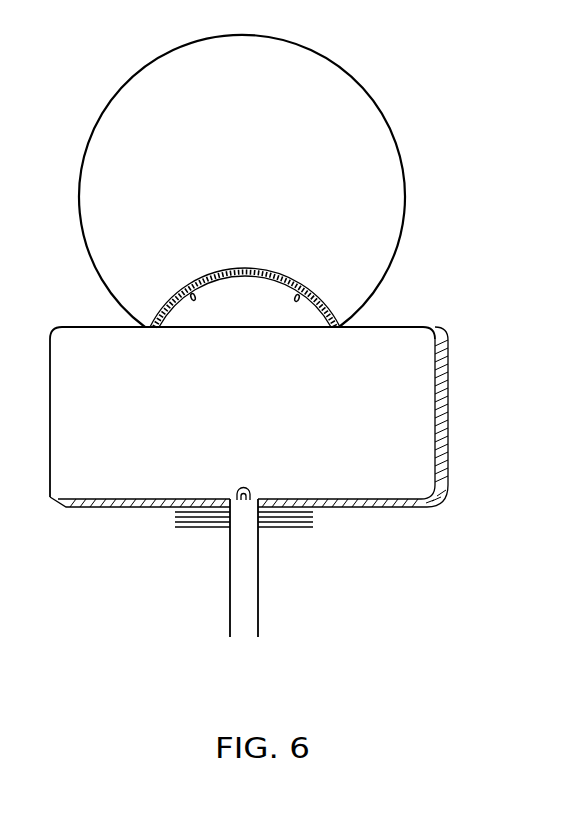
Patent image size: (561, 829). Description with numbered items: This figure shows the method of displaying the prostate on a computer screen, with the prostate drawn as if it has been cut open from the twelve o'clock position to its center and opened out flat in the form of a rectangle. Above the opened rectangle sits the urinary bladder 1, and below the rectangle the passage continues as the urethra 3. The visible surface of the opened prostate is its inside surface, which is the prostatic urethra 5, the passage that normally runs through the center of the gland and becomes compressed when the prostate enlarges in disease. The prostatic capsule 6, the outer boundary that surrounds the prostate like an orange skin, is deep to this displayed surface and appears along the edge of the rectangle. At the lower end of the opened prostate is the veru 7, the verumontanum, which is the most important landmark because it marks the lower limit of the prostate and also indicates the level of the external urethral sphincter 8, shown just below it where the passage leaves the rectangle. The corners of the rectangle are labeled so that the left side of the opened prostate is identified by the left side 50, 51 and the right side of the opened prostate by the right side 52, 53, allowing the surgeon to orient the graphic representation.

The urinary bladder 1 is at (388, 166).
The urethra 3 is at (247, 593).
The prostatic urethra 5 is at (145, 473).
The prostatic capsule 6 is at (448, 393).
The veru 7 is at (252, 500).
The external urethral sphincter 8 is at (305, 528).
The left side 50 is at (68, 338).
The left side 51 is at (65, 490).
The right side 52 is at (425, 333).
The right side 53 is at (423, 487).